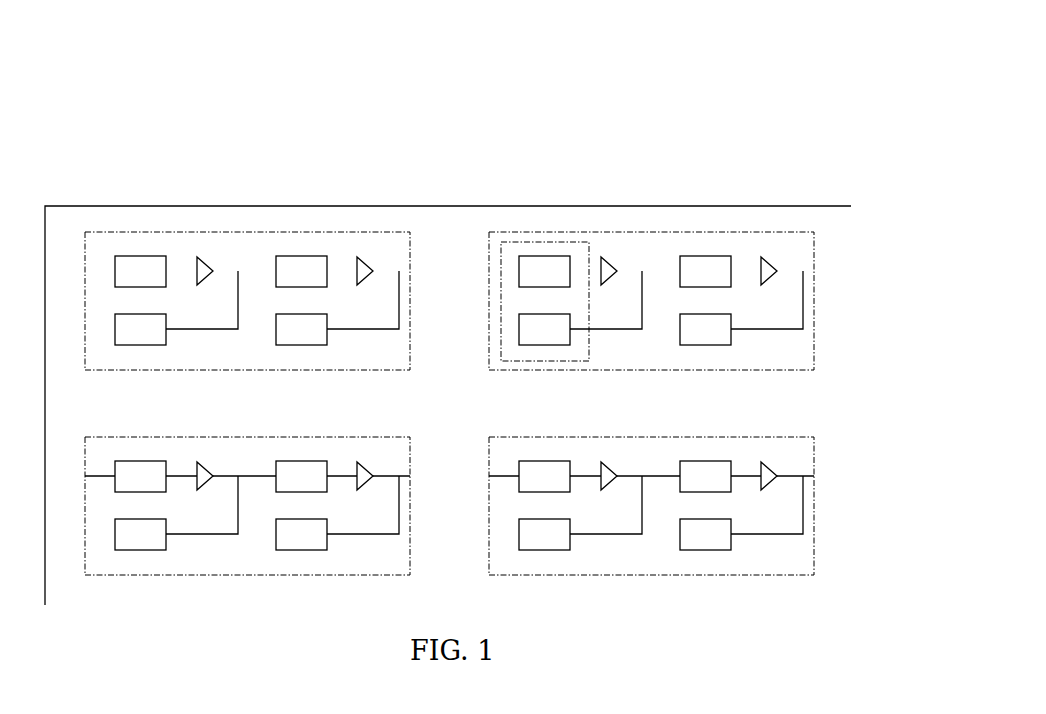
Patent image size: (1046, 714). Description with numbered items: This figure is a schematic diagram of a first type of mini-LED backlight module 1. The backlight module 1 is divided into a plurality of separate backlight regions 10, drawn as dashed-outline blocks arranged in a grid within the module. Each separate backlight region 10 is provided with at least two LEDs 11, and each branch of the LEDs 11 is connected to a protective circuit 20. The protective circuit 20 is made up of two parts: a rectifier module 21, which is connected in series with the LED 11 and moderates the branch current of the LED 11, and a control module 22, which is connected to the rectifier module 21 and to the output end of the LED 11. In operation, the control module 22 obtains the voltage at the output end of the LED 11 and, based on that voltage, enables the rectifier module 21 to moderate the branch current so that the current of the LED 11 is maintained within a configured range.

The mini-LED backlight module 1 is at (456, 108).
The separate backlight region 10 is at (656, 267).
The LED 11 is at (859, 237).
The protective circuit 20 is at (653, 267).
The rectifier module 21 is at (463, 207).
The control module 22 is at (734, 360).